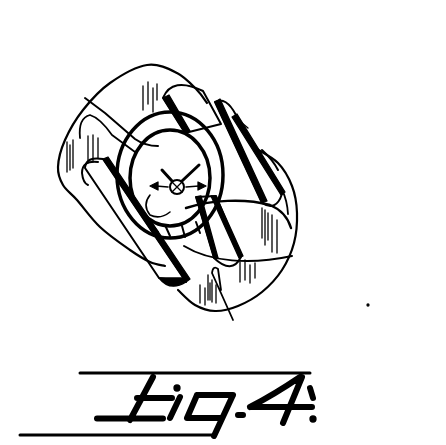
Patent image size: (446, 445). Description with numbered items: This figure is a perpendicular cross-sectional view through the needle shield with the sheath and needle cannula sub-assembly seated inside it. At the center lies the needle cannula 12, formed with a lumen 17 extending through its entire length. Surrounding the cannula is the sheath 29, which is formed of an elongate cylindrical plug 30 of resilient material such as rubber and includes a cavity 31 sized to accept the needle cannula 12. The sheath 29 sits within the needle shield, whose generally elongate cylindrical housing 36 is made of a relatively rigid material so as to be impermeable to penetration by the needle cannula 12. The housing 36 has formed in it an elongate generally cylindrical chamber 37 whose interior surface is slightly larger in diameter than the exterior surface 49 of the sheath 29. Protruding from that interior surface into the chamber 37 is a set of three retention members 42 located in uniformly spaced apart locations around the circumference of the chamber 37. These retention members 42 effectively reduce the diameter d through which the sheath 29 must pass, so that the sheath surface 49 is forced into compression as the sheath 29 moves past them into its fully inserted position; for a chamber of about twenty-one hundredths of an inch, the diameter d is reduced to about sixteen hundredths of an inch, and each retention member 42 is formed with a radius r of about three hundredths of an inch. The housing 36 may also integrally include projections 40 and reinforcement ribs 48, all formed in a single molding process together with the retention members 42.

The needle cannula 12 is at (80, 137).
The lumen 17 is at (216, 104).
The sheath 29 is at (227, 300).
The elongate cylindrical plug 30 is at (85, 98).
The cavity 31 is at (150, 265).
The housing 36 is at (218, 100).
The chamber 37 is at (242, 147).
The projections 40 is at (143, 87).
The retention member 42 is at (290, 208).
The reinforcement ribs 48 is at (276, 177).
The exterior surface 49 is at (285, 258).
The diameter d is at (250, 130).
The radius r is at (113, 237).